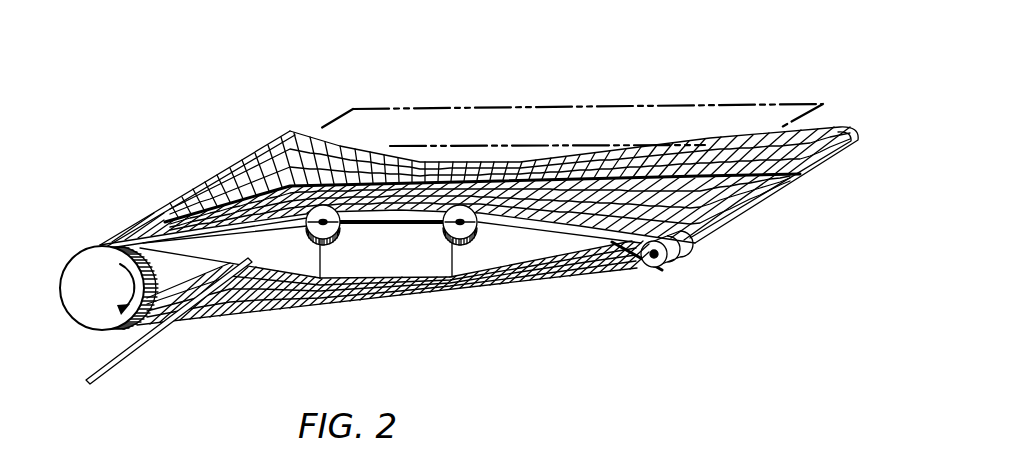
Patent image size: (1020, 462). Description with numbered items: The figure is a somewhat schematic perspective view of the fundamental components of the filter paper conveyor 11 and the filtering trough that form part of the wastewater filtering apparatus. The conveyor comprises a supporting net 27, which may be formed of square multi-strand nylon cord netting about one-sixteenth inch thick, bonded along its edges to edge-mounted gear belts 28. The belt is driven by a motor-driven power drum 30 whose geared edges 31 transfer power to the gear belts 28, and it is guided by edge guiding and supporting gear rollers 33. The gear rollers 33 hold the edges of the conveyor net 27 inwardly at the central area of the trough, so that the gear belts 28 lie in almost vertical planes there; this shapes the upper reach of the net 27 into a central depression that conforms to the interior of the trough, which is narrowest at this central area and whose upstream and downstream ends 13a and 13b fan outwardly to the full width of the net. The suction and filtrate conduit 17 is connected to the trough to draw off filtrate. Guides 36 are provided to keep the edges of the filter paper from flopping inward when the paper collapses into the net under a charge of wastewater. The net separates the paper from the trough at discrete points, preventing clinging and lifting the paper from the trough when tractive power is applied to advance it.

The conveyor 11 is at (652, 73).
The upstream end of the trough 13a is at (246, 258).
The downstream end of the trough 13b is at (514, 259).
The suction and filtrate conduit 17 is at (136, 356).
The supporting net 27 is at (258, 311).
The edge-mounted gear belts 28 is at (493, 282).
The motor-driven power drum 30 is at (106, 283).
The geared edges 31 is at (156, 294).
The edge guiding and supporting gear rollers 33 is at (430, 247).
The guides 36 is at (457, 108).